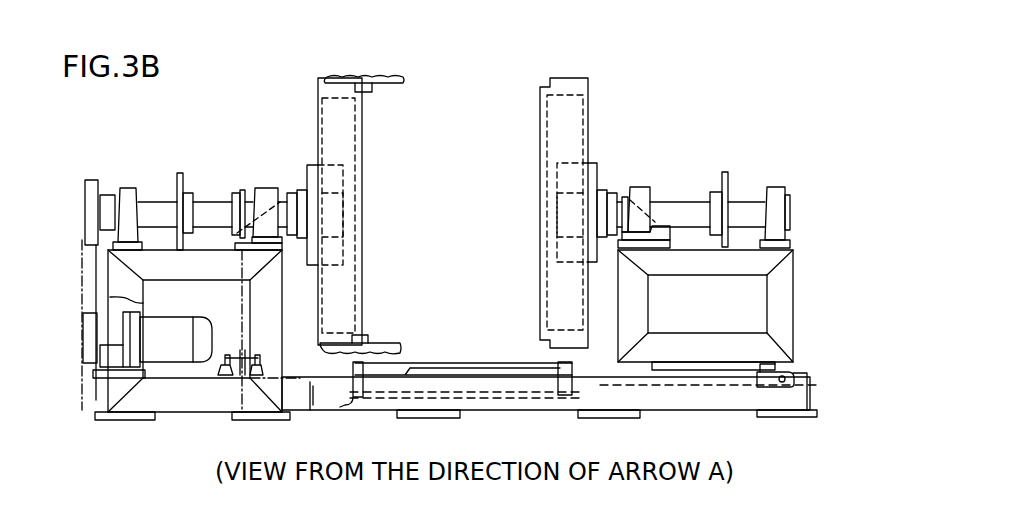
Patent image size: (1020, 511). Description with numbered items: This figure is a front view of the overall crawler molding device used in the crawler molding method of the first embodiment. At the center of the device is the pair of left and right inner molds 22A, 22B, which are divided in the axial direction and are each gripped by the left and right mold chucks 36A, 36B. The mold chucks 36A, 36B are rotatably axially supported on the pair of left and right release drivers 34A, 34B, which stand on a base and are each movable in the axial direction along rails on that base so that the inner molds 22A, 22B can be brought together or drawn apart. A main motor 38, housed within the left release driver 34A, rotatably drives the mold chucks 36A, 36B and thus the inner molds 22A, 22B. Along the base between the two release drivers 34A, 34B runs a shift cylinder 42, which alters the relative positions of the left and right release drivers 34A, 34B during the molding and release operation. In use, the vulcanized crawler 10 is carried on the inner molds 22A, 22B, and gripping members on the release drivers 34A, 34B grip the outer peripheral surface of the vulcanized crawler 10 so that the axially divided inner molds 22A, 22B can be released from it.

The vulcanized crawler 10 is at (383, 77).
The left inner mold 22A is at (323, 189).
The right inner mold 22B is at (563, 83).
The left release driver 34A is at (168, 272).
The right release driver 34B is at (677, 296).
The left mold chuck 36A is at (337, 173).
The right mold chuck 36B is at (583, 180).
The main motor 38 is at (173, 350).
The shift cylinder 42 is at (767, 383).